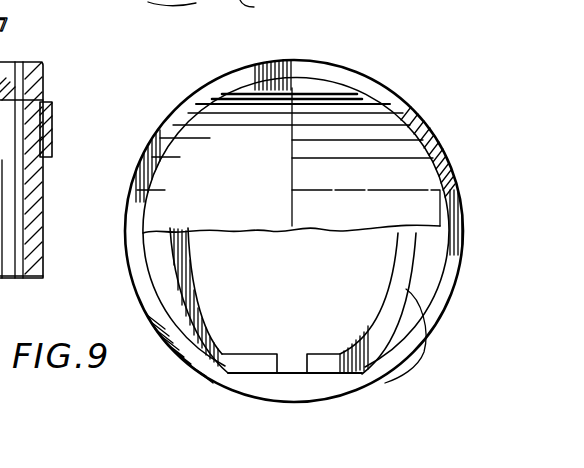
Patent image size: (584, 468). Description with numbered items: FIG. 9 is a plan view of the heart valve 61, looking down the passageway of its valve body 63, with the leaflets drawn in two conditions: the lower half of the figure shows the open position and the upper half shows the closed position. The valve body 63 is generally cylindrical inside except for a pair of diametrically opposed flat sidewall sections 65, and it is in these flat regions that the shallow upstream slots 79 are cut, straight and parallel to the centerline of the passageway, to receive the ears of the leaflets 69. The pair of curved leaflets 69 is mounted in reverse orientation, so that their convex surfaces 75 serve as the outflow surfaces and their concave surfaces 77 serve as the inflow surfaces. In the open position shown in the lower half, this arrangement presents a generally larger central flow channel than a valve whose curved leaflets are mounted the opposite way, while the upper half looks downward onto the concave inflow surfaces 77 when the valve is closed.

The heart valve 61 is at (366, 67).
The valve body 63 is at (184, 103).
The flat sidewall sections 65 is at (290, 372).
The leaflets 69 is at (236, 333).
The convex surfaces 75 is at (427, 312).
The concave surfaces 77 is at (194, 273).
The upstream slots 79 is at (261, 7).